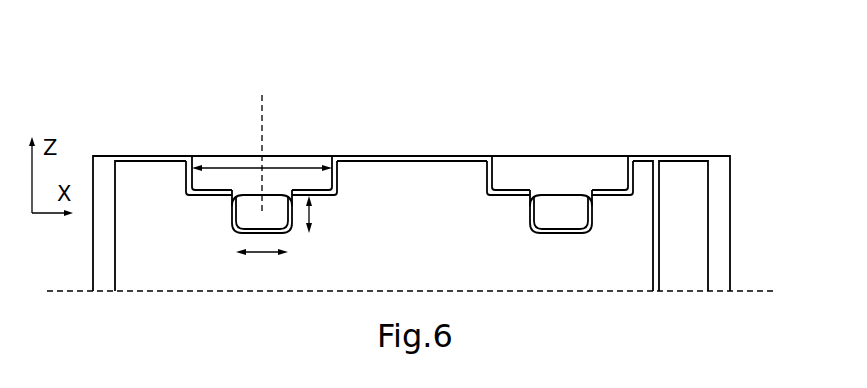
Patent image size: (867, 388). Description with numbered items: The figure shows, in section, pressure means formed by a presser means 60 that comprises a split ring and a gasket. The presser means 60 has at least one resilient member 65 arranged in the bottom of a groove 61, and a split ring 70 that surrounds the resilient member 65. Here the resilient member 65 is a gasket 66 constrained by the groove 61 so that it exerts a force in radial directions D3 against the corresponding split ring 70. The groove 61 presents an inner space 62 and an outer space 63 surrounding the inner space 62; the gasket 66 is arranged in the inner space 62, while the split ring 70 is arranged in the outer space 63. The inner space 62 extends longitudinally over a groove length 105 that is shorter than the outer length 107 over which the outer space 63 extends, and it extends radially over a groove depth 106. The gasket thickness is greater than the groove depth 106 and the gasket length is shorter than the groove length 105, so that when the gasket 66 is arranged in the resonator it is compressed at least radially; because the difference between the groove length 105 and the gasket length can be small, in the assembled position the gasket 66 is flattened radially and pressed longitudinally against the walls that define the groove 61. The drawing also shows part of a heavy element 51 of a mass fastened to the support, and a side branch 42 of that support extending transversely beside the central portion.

The side branch 42 is at (683, 270).
The heavy element 51 is at (150, 239).
The presser means 60 is at (382, 191).
The groove 61 is at (292, 194).
The inner space 62 is at (224, 232).
The outer space 63 is at (187, 179).
The resilient member 65 is at (377, 271).
The gasket 66 is at (243, 222).
The split ring 70 is at (361, 149).
The groove length 105 is at (262, 267).
The groove depth 106 is at (331, 214).
The outer length 107 is at (254, 167).
The radial directions D3 is at (262, 105).